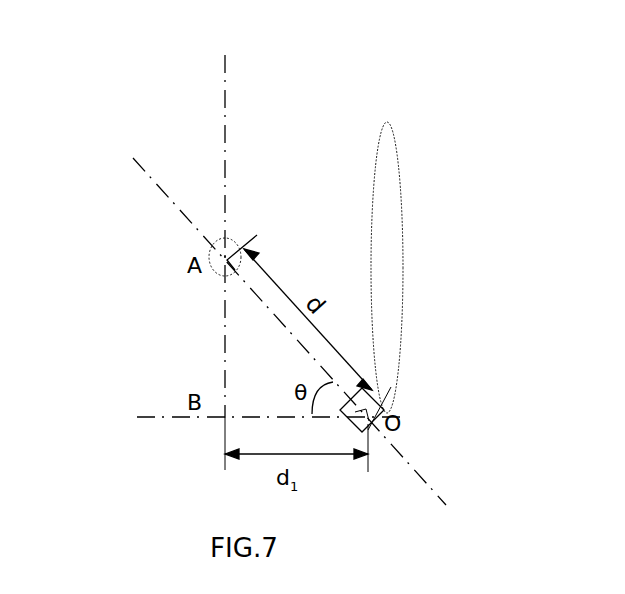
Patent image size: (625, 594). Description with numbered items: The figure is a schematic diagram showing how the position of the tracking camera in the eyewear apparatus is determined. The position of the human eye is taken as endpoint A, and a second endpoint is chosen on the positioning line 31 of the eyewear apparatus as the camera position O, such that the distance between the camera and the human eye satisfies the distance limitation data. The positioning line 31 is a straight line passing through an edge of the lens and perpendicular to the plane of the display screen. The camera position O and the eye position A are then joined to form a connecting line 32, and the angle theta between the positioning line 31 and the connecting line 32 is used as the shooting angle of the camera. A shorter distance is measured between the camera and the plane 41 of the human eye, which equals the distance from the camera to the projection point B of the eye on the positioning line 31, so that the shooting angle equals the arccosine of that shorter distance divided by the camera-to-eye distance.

The plane of the human eye 41 is at (173, 222).
The connecting line 32 is at (248, 331).
The positioning line 31 is at (229, 452).